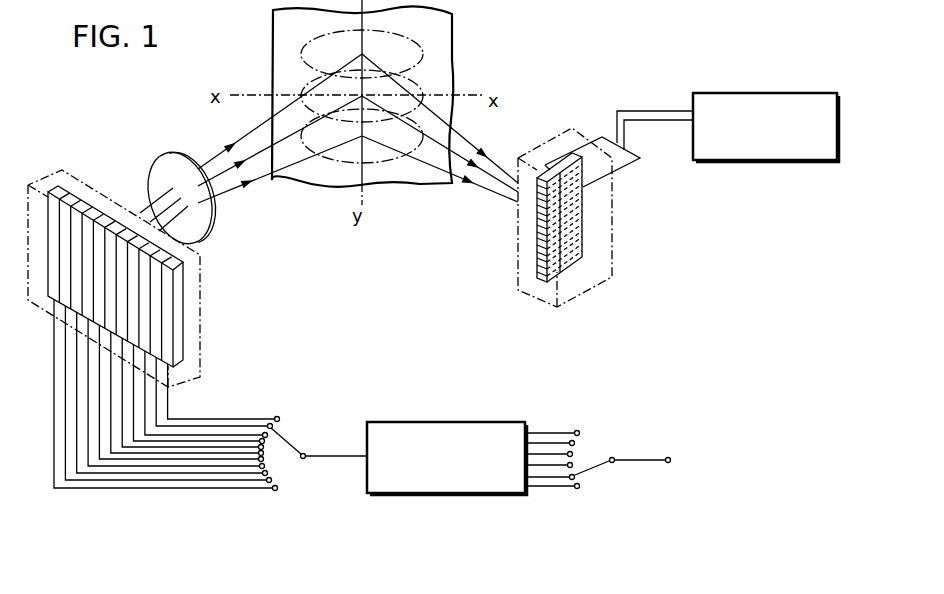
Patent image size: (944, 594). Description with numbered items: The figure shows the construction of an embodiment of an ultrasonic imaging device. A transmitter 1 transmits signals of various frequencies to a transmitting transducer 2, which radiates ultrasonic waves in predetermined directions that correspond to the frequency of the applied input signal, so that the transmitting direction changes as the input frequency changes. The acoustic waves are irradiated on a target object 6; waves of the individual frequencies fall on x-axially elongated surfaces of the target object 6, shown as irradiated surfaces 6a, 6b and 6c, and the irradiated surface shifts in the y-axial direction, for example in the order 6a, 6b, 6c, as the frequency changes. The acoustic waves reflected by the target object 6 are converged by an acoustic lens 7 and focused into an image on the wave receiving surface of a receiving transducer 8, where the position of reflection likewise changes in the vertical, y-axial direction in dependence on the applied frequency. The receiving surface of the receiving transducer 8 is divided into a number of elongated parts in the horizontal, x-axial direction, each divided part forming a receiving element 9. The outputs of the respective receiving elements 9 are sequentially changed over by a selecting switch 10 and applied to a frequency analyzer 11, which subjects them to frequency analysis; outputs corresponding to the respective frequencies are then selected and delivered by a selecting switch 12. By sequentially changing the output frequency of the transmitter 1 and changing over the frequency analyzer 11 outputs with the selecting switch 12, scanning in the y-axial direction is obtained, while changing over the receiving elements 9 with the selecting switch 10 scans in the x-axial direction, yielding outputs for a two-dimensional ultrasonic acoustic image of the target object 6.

The transmitter 1 is at (723, 92).
The transmitting transducer 2 is at (613, 248).
The target object 6 is at (273, 43).
The irradiated surface 6a is at (397, 34).
The irradiated surface 6b is at (425, 86).
The irradiated surface 6c is at (392, 160).
The acoustic lens 7 is at (157, 155).
The receiving transducer 8 is at (202, 288).
The receiving element 9 is at (185, 332).
The selecting switch 10 is at (288, 438).
The frequency analyzer 11 is at (412, 420).
The selecting switch 12 is at (592, 462).